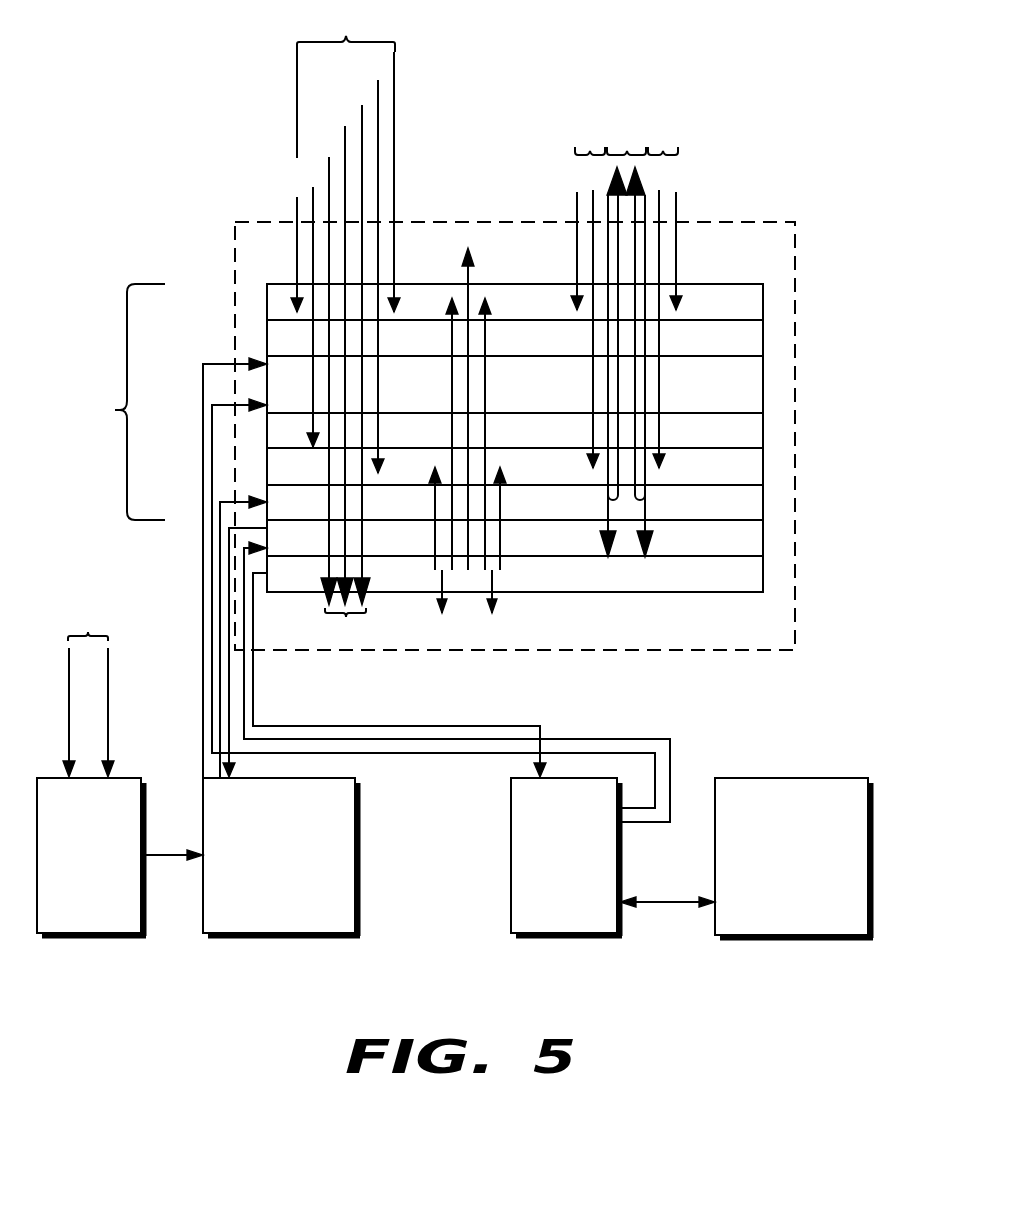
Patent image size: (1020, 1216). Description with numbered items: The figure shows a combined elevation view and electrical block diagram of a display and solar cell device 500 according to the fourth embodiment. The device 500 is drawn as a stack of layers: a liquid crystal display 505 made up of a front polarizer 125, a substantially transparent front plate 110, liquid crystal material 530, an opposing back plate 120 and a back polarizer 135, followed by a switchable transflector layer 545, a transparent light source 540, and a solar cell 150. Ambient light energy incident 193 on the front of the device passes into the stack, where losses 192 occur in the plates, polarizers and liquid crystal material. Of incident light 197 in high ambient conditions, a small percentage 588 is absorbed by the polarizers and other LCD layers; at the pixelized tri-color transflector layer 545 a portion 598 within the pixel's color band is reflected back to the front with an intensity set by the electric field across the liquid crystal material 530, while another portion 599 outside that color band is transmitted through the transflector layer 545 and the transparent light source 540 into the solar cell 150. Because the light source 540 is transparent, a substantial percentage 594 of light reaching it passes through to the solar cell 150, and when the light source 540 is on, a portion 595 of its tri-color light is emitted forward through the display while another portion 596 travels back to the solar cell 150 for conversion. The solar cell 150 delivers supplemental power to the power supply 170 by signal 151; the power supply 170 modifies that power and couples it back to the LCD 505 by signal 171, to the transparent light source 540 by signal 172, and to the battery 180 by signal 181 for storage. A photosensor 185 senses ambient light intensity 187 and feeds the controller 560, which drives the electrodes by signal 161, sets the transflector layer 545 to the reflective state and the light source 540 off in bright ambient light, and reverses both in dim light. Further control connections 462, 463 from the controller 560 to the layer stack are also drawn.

The display and solar cell device 500 is at (730, 220).
The front polarizer 125 is at (763, 302).
The front plate 110 is at (763, 338).
The liquid crystal material 530 is at (763, 382).
The back plate 120 is at (763, 432).
The back polarizer 135 is at (763, 467).
The switchable transflector layer 545 is at (763, 502).
The transparent light source 540 is at (763, 537).
The solar cell 150 is at (763, 572).
The liquid crystal display 505 is at (110, 411).
The incident ambient light 193 is at (346, 35).
The losses 192 is at (394, 62).
The emitted portion 595 is at (462, 258).
The substantial percentage 594 is at (345, 613).
The portion of generated light 596 is at (440, 608).
The small percentage absorbed 588 is at (577, 201).
The incident light 197 is at (591, 148).
The reflected portion 598 is at (627, 147).
The transmitted portion 599 is at (603, 566).
The signal 171 is at (203, 588).
The control line 462 is at (212, 734).
The control line 463 is at (220, 626).
The signal 161 is at (229, 664).
The signal 172 is at (244, 699).
The signal 151 is at (420, 726).
The light intensity 187 is at (88, 630).
The photosensor 185 is at (117, 938).
The controller 560 is at (340, 938).
The power supply 170 is at (600, 938).
The battery 180 is at (855, 940).
The signal 181 is at (671, 898).